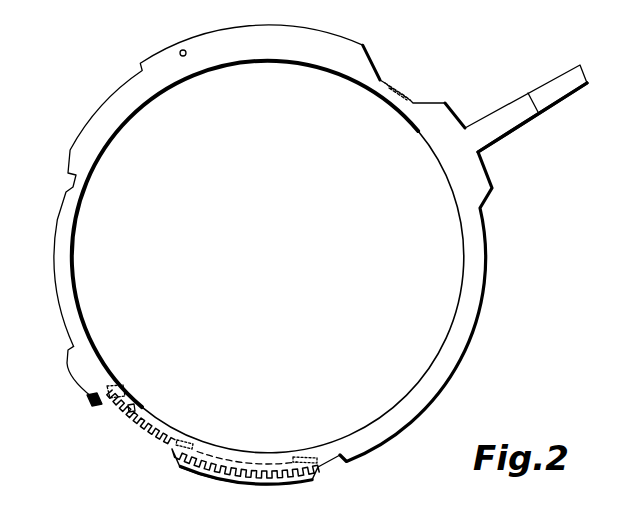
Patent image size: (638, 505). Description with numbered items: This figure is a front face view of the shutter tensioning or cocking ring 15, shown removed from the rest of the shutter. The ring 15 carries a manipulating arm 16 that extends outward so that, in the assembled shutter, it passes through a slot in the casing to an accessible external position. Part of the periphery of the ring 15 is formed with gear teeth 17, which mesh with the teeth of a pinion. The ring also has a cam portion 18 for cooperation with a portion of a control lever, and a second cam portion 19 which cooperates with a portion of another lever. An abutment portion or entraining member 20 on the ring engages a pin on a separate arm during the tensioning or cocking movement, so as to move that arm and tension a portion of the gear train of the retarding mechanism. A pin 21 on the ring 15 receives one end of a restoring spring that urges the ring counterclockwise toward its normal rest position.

The tensioning or cocking ring 15 is at (470, 280).
The manipulating arm 16 is at (555, 92).
The gear teeth 17 is at (133, 428).
The cam portion 18 is at (178, 463).
The second cam portion 19 is at (83, 374).
The abutment portion or entraining member 20 is at (93, 402).
The pin 21 is at (181, 51).